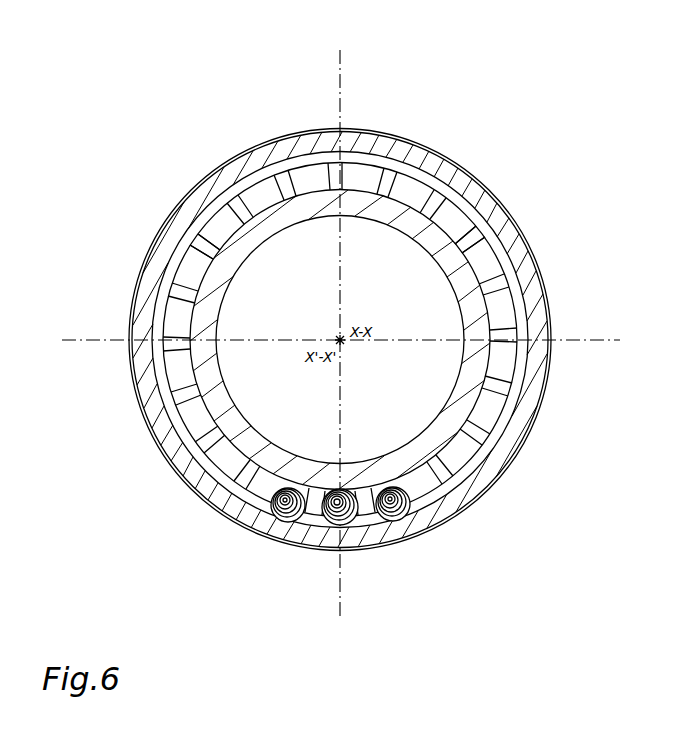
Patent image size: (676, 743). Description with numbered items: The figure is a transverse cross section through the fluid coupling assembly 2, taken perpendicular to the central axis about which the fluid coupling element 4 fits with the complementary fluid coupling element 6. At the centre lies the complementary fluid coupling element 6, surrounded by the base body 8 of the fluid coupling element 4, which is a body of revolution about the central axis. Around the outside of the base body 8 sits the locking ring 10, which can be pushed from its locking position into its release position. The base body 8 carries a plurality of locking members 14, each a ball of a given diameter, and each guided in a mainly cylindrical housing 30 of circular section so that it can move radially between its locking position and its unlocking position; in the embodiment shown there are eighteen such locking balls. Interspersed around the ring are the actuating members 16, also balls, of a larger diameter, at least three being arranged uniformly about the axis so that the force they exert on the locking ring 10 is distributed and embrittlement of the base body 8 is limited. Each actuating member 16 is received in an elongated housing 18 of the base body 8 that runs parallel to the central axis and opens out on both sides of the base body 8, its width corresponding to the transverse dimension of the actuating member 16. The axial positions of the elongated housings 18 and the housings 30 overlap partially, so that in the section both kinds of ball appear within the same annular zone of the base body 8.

The fluid coupling assembly 2 is at (382, 287).
The fluid coupling element 4 is at (540, 263).
The complementary fluid coupling element 6 is at (297, 468).
The base body 8 is at (398, 150).
The locking ring 10 is at (455, 172).
The locking members 14 is at (288, 505).
The actuating members 16 is at (340, 510).
The elongated housing 18 is at (197, 258).
The housing 30 is at (228, 212).